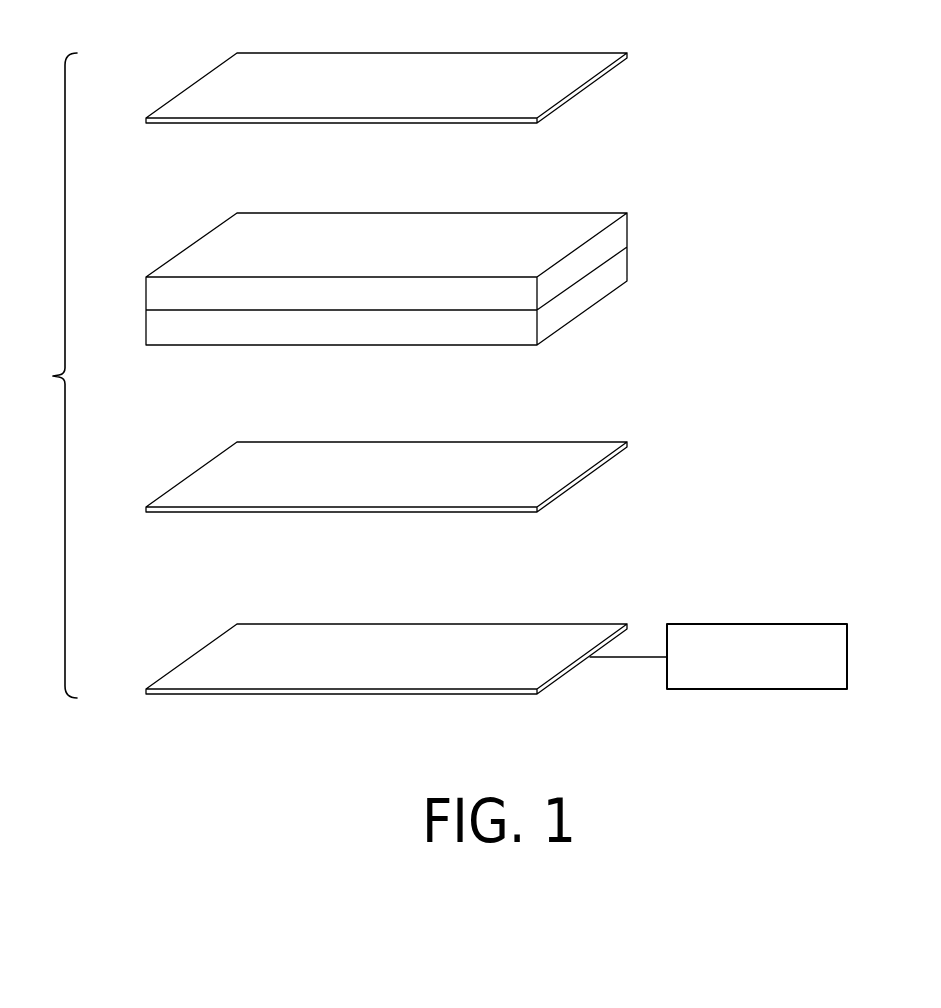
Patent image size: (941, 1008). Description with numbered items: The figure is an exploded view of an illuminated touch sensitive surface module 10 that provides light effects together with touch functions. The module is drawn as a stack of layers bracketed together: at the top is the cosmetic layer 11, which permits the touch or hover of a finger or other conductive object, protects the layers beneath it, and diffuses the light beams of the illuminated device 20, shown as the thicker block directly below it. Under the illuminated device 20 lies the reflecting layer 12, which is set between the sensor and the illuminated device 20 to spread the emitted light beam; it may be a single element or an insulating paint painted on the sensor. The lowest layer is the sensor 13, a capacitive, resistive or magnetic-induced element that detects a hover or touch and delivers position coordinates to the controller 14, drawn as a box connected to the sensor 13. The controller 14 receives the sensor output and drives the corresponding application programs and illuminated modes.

The touch sensitive surface module 10 is at (48, 375).
The cosmetic layer 11 is at (598, 66).
The illuminated device 20 is at (625, 272).
The reflecting layer 12 is at (617, 452).
The sensor 13 is at (198, 660).
The controller 14 is at (847, 657).